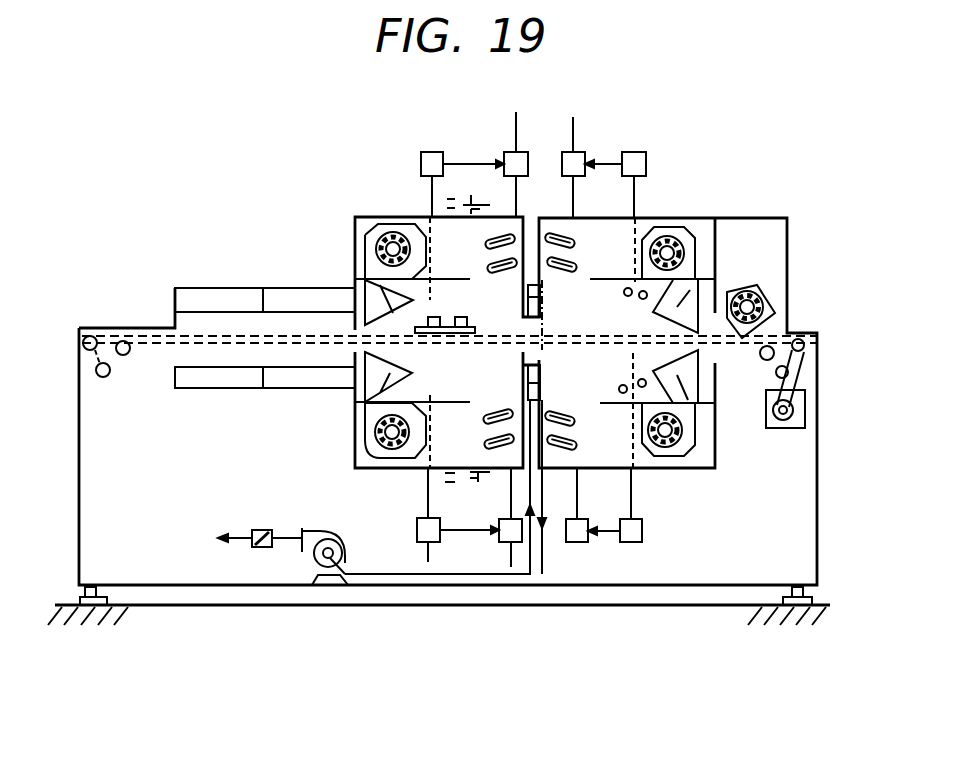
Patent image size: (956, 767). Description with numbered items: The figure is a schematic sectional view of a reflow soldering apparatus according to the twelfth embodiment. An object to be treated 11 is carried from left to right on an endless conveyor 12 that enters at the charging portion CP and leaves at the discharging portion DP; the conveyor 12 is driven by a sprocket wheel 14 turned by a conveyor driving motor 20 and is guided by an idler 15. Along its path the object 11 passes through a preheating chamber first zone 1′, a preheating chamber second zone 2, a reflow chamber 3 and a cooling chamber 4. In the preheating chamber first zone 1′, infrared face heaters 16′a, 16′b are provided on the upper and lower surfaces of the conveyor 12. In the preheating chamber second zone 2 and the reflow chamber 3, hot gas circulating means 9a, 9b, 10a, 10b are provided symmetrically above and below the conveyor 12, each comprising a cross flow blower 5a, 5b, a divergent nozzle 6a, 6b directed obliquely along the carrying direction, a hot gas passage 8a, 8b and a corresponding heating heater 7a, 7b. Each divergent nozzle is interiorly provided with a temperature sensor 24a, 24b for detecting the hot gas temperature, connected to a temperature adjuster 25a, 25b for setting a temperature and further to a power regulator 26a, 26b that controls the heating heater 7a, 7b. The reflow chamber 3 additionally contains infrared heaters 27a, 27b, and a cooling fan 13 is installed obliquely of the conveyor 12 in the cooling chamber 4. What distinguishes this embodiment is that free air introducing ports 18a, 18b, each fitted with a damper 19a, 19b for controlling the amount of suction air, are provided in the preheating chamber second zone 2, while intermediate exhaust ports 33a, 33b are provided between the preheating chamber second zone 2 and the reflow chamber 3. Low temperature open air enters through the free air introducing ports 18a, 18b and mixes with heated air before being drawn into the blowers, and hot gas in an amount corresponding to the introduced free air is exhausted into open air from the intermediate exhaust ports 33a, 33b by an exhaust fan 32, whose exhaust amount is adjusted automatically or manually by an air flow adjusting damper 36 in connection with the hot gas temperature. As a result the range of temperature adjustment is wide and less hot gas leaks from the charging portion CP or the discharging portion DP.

The charging portion CP is at (170, 328).
The preheating chamber first zone 1′ is at (190, 288).
The infrared face heater 16′a is at (248, 297).
The infrared face heater 16′b is at (283, 380).
The conveyor 12 is at (123, 340).
The idler 15 is at (90, 336).
The preheating chamber second zone 2 is at (356, 217).
The reflow chamber 3 is at (702, 218).
The cooling chamber 4 is at (788, 230).
The cross flow blower 5a is at (395, 232).
The divergent nozzle 6a is at (376, 226).
The heating heater 7a is at (456, 246).
The hot gas passage 8a is at (412, 236).
The hot gas circulating means 9a is at (398, 122).
The hot gas circulating means 10a is at (735, 122).
The cross flow blower 5b is at (385, 468).
The divergent nozzle 6b is at (362, 463).
The heating heater 7b is at (480, 437).
The hot gas passage 8b is at (445, 445).
The hot gas circulating means 9b is at (413, 511).
The hot gas circulating means 10b is at (757, 541).
The object to be treated 11 is at (470, 325).
The cooling fan 13 is at (760, 290).
The sprocket wheel 14 is at (812, 334).
The discharging portion DP is at (792, 330).
The conveyor driving motor 20 is at (783, 429).
The temperature sensor 24a is at (410, 290).
The temperature sensor 24b is at (412, 382).
The temperature adjuster 25a is at (430, 150).
The temperature adjuster 25b is at (428, 562).
The power regulator 26a is at (563, 150).
The power regulator 26b is at (577, 542).
The infrared heater 27a is at (637, 299).
The infrared heater 27b is at (646, 380).
The free air introducing port 18a is at (452, 210).
The free air introducing port 18b is at (452, 485).
The damper 19a is at (490, 205).
The damper 19b is at (481, 519).
The intermediate exhaust port 33a is at (540, 312).
The intermediate exhaust port 33b is at (540, 382).
The exhaust fan 32 is at (305, 550).
The air flow adjusting damper 36 is at (258, 530).